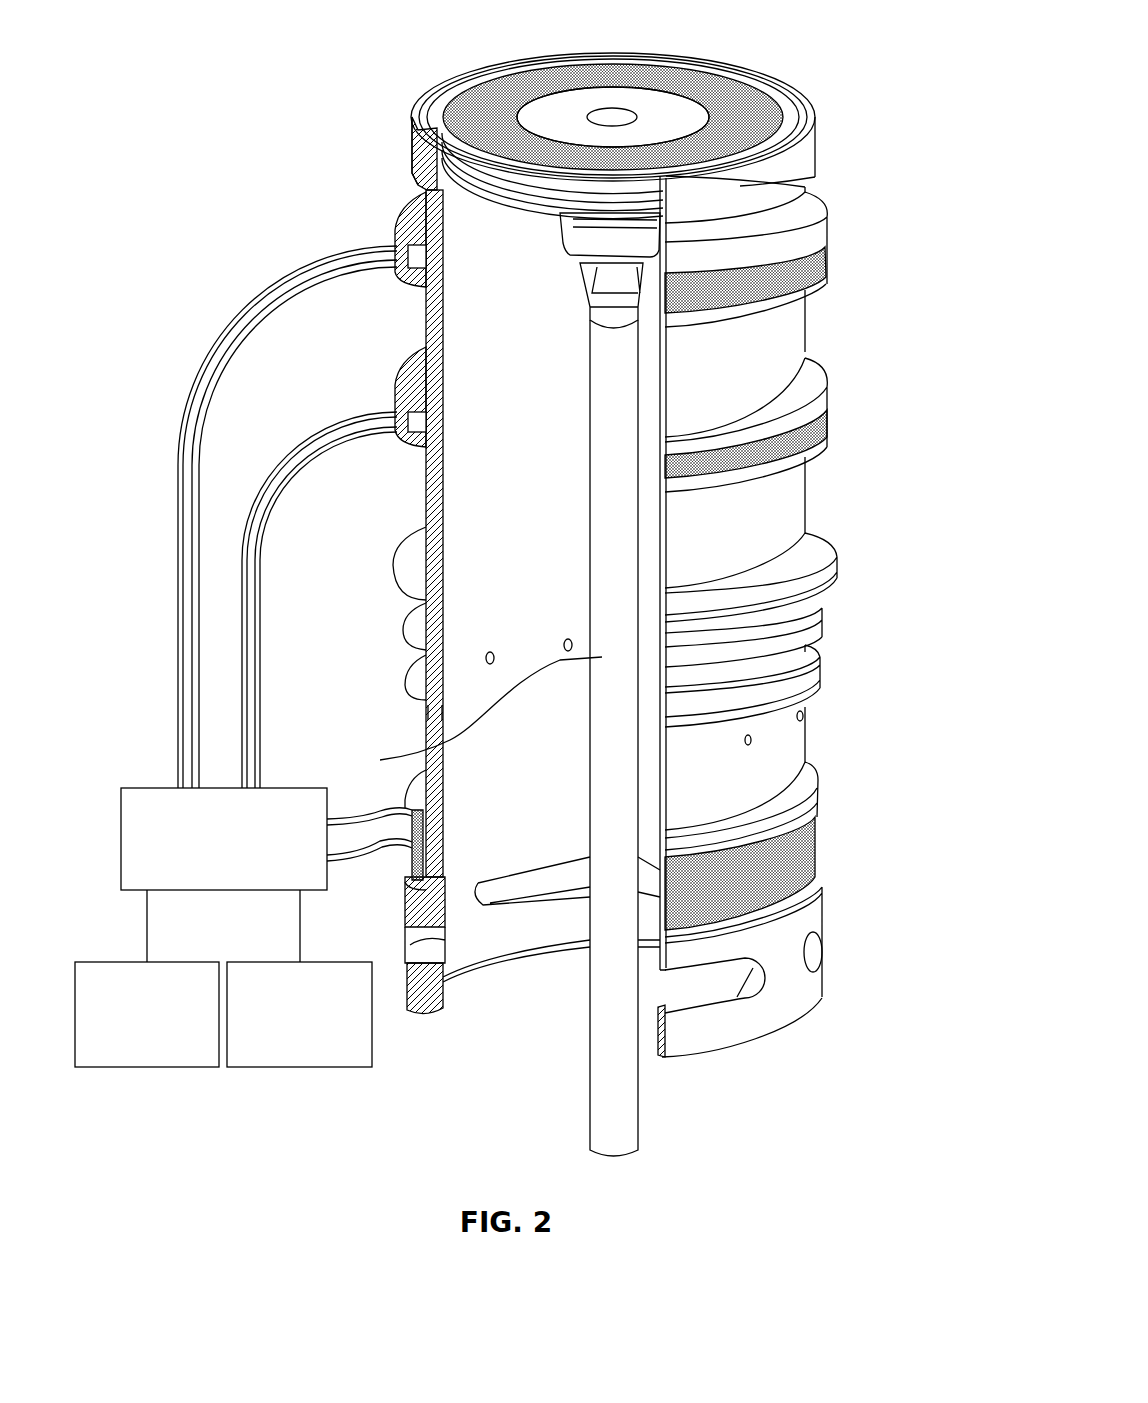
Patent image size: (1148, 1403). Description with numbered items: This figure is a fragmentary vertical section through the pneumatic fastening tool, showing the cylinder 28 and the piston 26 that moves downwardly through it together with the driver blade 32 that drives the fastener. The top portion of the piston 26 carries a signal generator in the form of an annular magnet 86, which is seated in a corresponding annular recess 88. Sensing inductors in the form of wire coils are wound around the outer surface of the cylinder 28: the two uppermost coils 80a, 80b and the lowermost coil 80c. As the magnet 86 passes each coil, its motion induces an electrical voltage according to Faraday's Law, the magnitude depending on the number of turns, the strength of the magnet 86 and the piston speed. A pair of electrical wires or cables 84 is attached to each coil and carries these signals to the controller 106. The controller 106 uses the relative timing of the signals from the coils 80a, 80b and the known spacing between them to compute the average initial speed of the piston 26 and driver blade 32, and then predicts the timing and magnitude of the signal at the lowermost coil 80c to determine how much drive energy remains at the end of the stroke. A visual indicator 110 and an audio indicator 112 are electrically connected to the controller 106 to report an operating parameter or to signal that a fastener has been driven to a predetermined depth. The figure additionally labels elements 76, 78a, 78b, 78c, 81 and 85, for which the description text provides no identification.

The piston 26 is at (659, 106).
The cylinder 28 is at (793, 323).
The driver blade 32 is at (380, 760).
The housing assembly 76 is at (393, 223).
The first seal 78a is at (829, 285).
The second seal 78b is at (829, 447).
The third seal 78c is at (826, 878).
The uppermost coil 80a is at (827, 250).
The uppermost coil 80b is at (827, 410).
The lowermost coil 80c is at (820, 843).
The shaft 81 is at (502, 457).
The electrical wires or cables 84 is at (196, 402).
The inner surface 85 is at (547, 106).
The annular magnet 86 is at (735, 95).
The annular recess 88 is at (798, 106).
The controller 106 is at (172, 788).
The visual indicator 110 is at (123, 962).
The audio indicator 112 is at (278, 962).